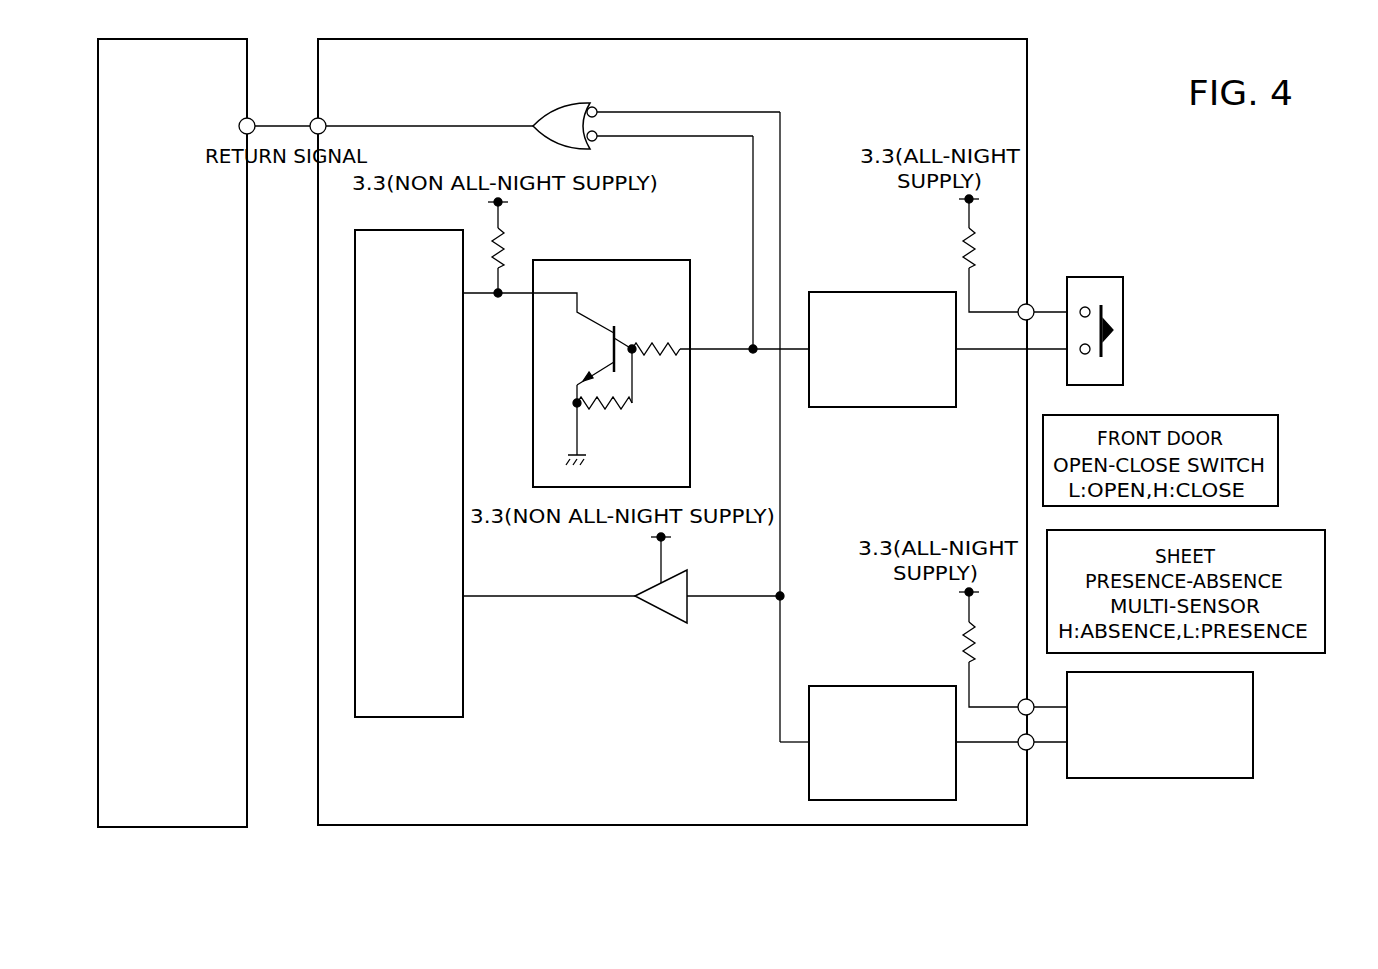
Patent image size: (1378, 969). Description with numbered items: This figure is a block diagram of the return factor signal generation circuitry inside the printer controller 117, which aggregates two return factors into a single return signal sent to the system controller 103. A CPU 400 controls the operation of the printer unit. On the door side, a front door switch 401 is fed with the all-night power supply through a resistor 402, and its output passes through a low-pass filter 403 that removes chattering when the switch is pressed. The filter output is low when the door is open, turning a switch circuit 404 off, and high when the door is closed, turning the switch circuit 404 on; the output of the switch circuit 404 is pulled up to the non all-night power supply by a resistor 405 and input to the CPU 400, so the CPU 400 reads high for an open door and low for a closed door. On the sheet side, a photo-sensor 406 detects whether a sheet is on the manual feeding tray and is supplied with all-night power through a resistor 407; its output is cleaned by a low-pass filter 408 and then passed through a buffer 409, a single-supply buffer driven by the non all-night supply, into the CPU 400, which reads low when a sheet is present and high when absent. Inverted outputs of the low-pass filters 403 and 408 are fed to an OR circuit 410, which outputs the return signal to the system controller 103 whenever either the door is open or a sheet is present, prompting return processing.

The system controller 103 is at (247, 310).
The printer controller 117 is at (318, 540).
The CPU 400 is at (463, 393).
The front door switch 401 is at (1094, 277).
The resistor 402 is at (956, 255).
The low-pass filter 403 is at (866, 290).
The switch circuit 404 is at (657, 258).
The resistor 405 is at (488, 233).
The photo-sensor 406 is at (1253, 722).
The resistor 407 is at (956, 646).
The low-pass filter 408 is at (866, 684).
The buffer 409 is at (657, 619).
The OR circuit 410 is at (557, 104).